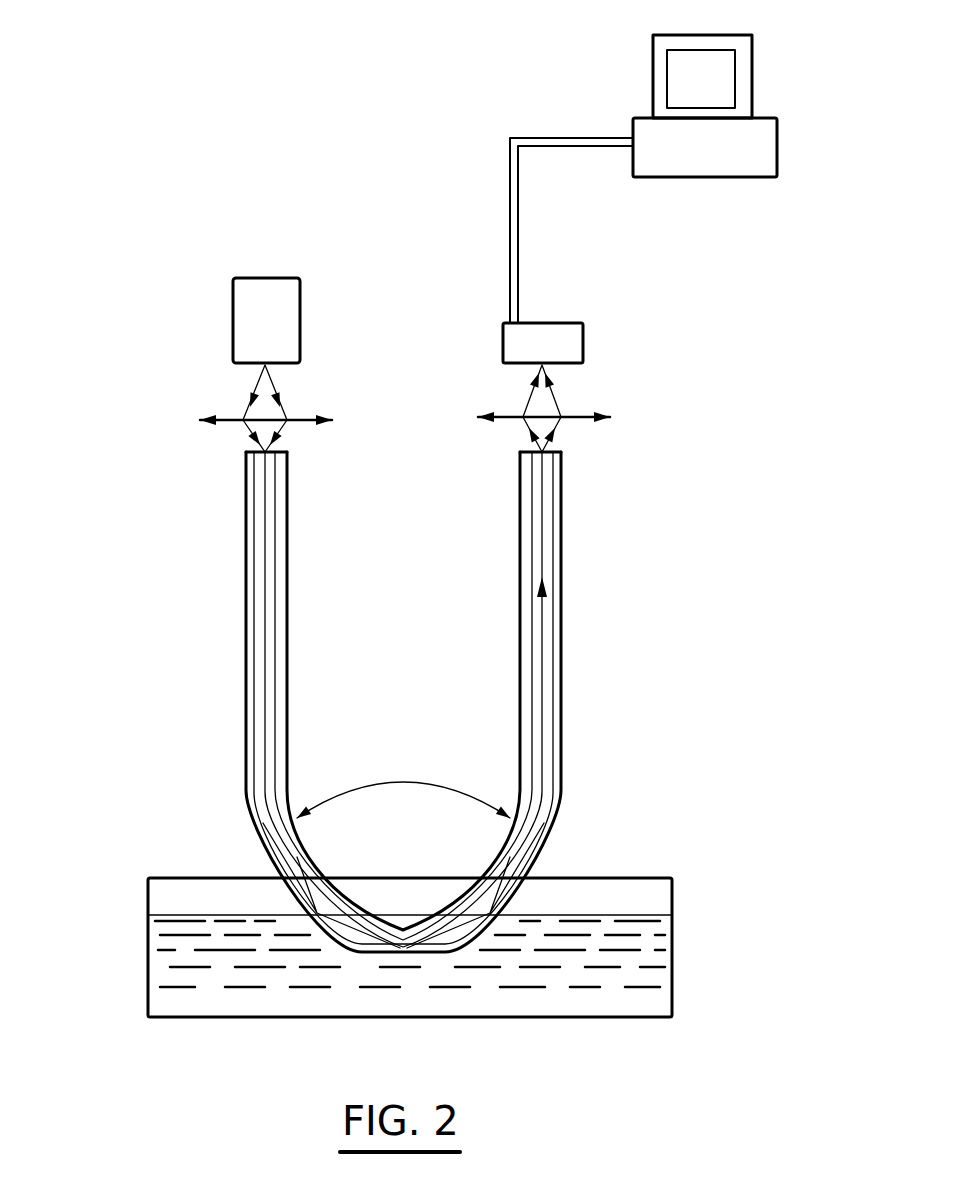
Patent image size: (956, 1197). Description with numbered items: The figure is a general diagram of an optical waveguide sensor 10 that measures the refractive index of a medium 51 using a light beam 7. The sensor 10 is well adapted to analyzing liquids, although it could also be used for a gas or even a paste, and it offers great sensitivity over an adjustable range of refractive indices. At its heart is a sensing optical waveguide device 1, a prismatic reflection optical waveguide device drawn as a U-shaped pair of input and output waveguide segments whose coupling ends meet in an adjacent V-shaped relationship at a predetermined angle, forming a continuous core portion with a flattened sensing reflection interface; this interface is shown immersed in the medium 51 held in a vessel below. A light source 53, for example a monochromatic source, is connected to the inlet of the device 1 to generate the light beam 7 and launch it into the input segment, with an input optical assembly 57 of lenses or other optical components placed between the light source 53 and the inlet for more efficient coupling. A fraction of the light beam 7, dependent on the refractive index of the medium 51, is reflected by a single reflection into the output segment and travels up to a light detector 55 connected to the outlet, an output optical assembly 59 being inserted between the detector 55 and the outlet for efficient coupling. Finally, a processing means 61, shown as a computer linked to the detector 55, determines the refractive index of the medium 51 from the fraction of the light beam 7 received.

The sensing optical waveguide device 1 is at (319, 702).
The light beam 7 is at (262, 487).
The optical waveguide sensor 10 is at (383, 160).
The medium 51 is at (662, 958).
The light source 53 is at (203, 298).
The light detector 55 is at (584, 311).
The input optical assembly 57 is at (206, 421).
The output optical assembly 59 is at (580, 416).
The processing means 61 is at (595, 85).